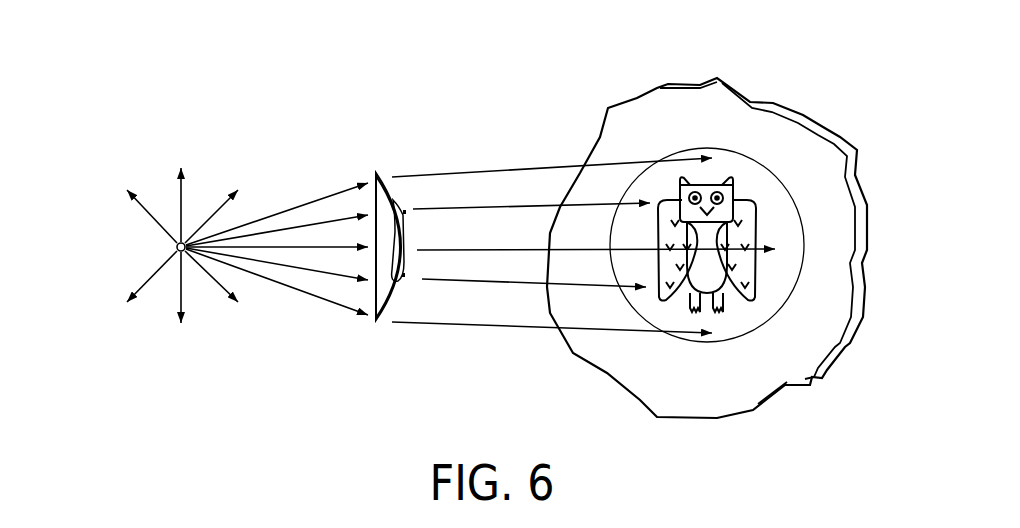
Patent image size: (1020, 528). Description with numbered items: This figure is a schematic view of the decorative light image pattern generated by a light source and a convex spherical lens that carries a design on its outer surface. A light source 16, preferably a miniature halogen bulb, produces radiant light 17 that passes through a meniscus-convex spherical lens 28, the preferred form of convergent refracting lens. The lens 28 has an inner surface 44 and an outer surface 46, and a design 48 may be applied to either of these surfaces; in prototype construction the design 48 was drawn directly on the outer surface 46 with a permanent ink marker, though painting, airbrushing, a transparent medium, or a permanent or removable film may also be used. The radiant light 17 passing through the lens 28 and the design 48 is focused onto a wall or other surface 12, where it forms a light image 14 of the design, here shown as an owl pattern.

The wall or other surface 12 is at (800, 330).
The light image 14 is at (767, 213).
The light source 16 is at (168, 248).
The radiant light 17 is at (277, 212).
The meniscus-convex spherical lens 28 is at (384, 195).
The inner surface 44 is at (365, 292).
The outer surface 46 is at (388, 293).
The design 48 is at (408, 236).